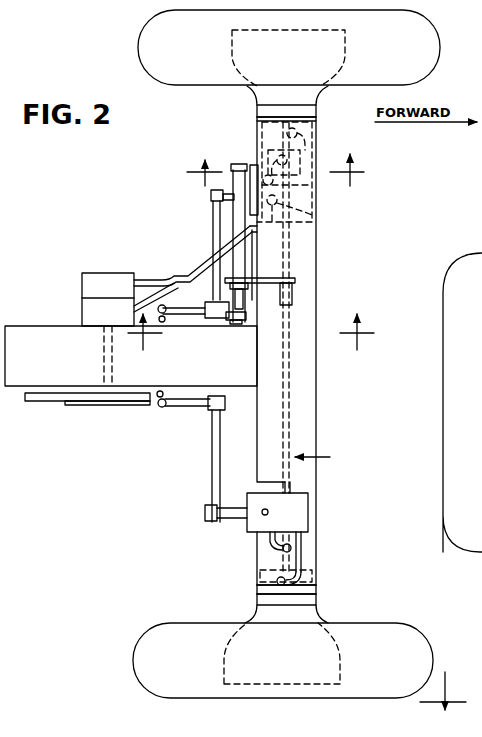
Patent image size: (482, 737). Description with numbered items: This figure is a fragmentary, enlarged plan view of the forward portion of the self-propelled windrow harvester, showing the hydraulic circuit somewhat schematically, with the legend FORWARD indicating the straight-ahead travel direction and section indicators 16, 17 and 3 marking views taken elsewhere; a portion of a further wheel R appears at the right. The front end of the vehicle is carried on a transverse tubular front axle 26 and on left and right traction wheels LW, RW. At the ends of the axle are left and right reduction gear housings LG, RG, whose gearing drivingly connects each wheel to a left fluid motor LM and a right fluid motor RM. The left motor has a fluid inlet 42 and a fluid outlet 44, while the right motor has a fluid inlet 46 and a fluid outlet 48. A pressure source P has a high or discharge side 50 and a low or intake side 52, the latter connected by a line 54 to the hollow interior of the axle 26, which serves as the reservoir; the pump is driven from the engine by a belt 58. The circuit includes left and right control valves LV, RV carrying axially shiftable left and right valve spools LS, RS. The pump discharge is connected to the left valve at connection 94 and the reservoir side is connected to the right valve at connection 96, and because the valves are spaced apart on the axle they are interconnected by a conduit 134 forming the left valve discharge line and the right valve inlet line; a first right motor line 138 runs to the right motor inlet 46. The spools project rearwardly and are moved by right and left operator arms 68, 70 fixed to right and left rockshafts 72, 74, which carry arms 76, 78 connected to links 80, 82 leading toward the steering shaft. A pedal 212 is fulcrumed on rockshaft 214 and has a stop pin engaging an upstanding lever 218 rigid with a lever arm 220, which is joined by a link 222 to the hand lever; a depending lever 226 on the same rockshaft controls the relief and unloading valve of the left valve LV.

The left traction wheel LW is at (425, 62).
The right traction wheel RW is at (412, 636).
The rear wheel R is at (481, 262).
The left reduction gear housing LG is at (310, 104).
The right reduction gear housing RG is at (305, 613).
The left fluid motor LM is at (312, 141).
The right fluid motor RM is at (306, 576).
The left valve LV is at (300, 203).
The right valve RV is at (300, 511).
The left valve spool LS is at (210, 196).
The right valve spool RS is at (235, 520).
The pressure source P is at (95, 280).
The transverse tubular front axle 26 is at (310, 403).
The fluid inlet 42 is at (267, 152).
The fluid outlet 44 is at (300, 135).
The fluid inlet 46 is at (277, 580).
The fluid outlet 48 is at (294, 550).
The high or discharge side 50 is at (141, 280).
The low or intake side 52 is at (134, 309).
The line 54 is at (197, 257).
The belt 58 is at (44, 402).
The right hand operator arm 68 is at (206, 514).
The left hand operator arm 70 is at (213, 205).
The right rockshaft 72 is at (213, 466).
The left rockshaft 74 is at (215, 229).
The arm 76 is at (193, 407).
The arm 78 is at (200, 316).
The link 80 is at (163, 392).
The link 82 is at (163, 322).
The connection 94 is at (306, 216).
The connection 96 is at (264, 516).
The conduit 134 is at (291, 488).
The first right motor line 138 is at (303, 564).
The pedal 212 is at (292, 278).
The fulcrum point 214 is at (250, 305).
The upstanding lever 218 is at (293, 291).
The lever arm 220 is at (216, 320).
The link 222 is at (236, 324).
The depending lever 226 is at (237, 168).
The section line 16- 16 is at (273, 170).
The section line 17- 17 is at (251, 336).
The view arrow 3 is at (386, 581).